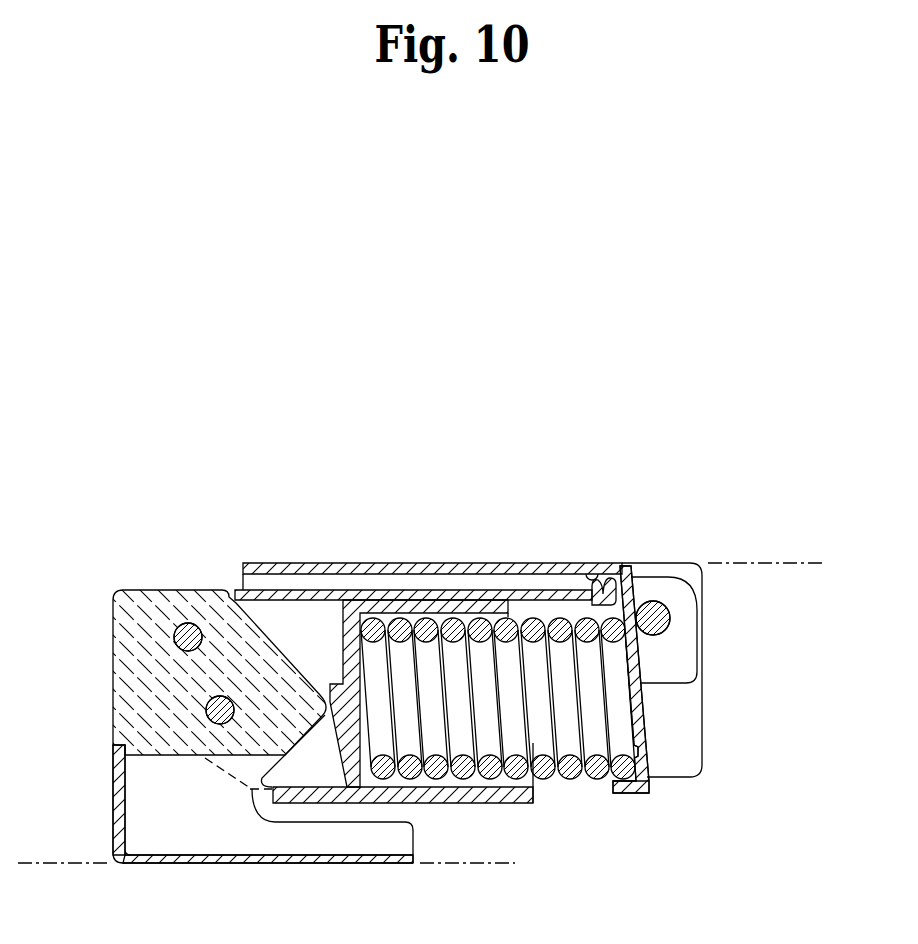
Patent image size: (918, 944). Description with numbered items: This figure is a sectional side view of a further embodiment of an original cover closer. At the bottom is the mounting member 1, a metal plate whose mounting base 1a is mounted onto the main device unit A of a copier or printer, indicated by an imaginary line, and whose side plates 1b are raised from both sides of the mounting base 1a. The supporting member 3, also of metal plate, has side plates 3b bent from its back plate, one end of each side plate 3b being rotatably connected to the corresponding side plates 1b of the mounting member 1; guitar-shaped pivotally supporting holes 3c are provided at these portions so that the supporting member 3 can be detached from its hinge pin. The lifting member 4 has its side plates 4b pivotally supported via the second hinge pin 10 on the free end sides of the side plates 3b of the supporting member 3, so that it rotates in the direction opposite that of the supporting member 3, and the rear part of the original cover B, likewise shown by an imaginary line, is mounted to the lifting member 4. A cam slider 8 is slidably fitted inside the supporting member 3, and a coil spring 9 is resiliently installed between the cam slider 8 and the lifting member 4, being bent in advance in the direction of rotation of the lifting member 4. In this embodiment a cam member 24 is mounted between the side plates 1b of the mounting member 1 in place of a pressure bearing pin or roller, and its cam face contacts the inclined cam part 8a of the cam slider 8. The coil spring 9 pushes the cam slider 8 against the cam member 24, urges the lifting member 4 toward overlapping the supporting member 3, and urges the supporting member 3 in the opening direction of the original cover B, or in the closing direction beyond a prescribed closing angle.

The mounting member 1 is at (228, 840).
The mounting base 1a is at (262, 840).
The side plates 1b is at (172, 835).
The supporting member 3 is at (504, 660).
The side plates 3b is at (683, 600).
The pivotally supporting holes 3c is at (644, 761).
The lifting member 4 is at (496, 633).
The side plates 4b is at (696, 714).
The cam slider 8 is at (397, 658).
The inclined cam part 8a is at (342, 746).
The coil spring 9 is at (573, 785).
The second hinge pin 10 is at (667, 628).
The cam member 24 is at (278, 673).
The main device unit A is at (486, 860).
The original cover B is at (768, 563).